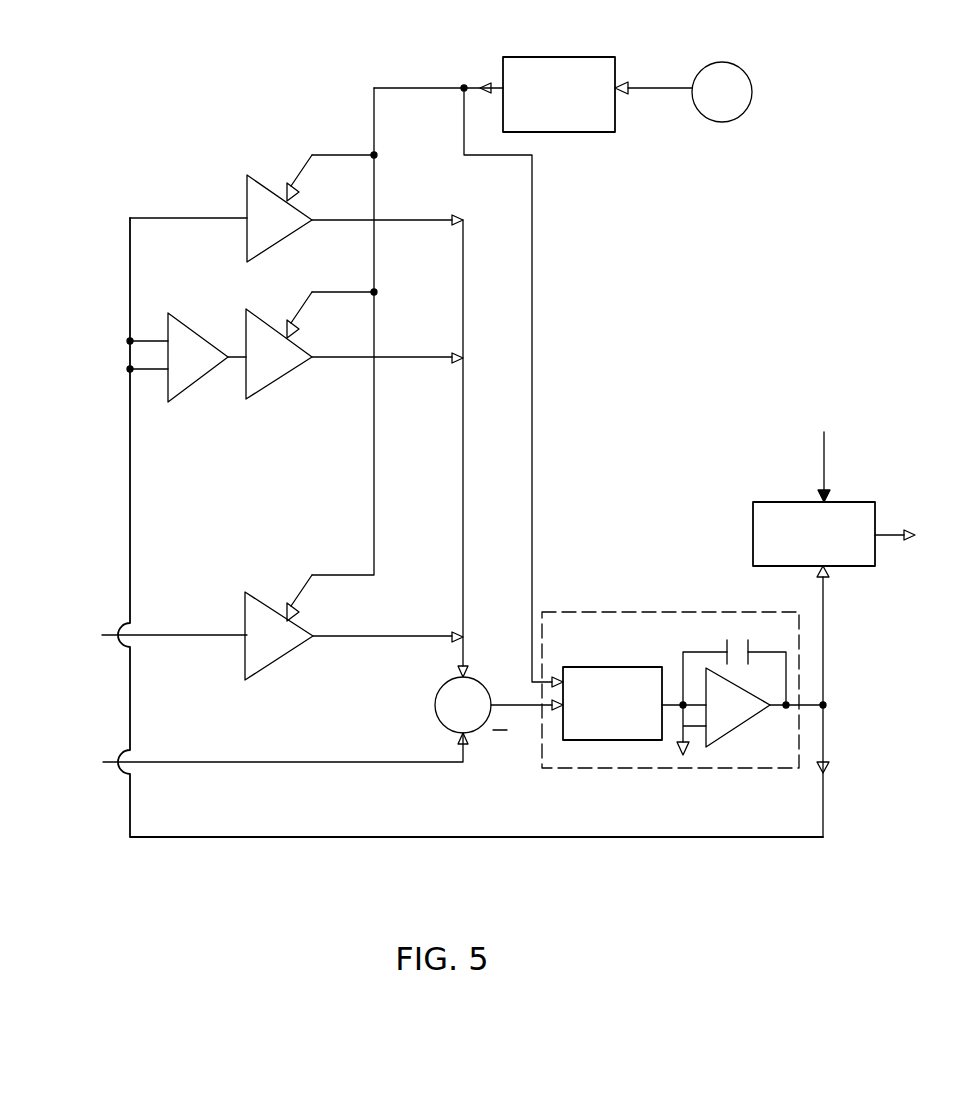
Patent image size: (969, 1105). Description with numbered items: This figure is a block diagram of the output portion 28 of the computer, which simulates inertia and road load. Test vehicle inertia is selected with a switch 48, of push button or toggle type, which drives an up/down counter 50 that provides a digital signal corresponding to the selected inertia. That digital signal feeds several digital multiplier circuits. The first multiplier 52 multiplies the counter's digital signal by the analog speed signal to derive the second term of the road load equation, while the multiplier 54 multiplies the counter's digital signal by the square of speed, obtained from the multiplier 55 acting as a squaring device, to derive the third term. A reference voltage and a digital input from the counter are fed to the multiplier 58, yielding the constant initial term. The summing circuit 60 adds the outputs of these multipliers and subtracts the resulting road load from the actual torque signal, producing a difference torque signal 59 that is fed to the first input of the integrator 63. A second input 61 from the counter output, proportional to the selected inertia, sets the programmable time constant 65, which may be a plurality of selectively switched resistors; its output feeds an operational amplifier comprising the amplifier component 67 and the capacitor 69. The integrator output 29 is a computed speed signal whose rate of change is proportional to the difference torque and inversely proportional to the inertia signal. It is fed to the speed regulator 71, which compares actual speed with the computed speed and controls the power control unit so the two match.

The torque regulator circuit 28 is at (173, 168).
The output of integrator 29 is at (825, 710).
The switch 48 is at (752, 80).
The up/down counter 50 is at (615, 75).
The first multiplier 52 is at (247, 240).
The multiplier 54 is at (243, 380).
The multiplier 55 is at (193, 332).
The multiplier 58 is at (243, 653).
The difference torque signal 59 is at (527, 708).
The summing circuit 60 is at (483, 682).
The second input to integrator 61 is at (530, 513).
The integrator 63 is at (718, 769).
The programmable time constant 65 is at (612, 667).
The amplifier component 67 is at (740, 725).
The capacitor 69 is at (750, 647).
The speed regulator 71 is at (837, 500).